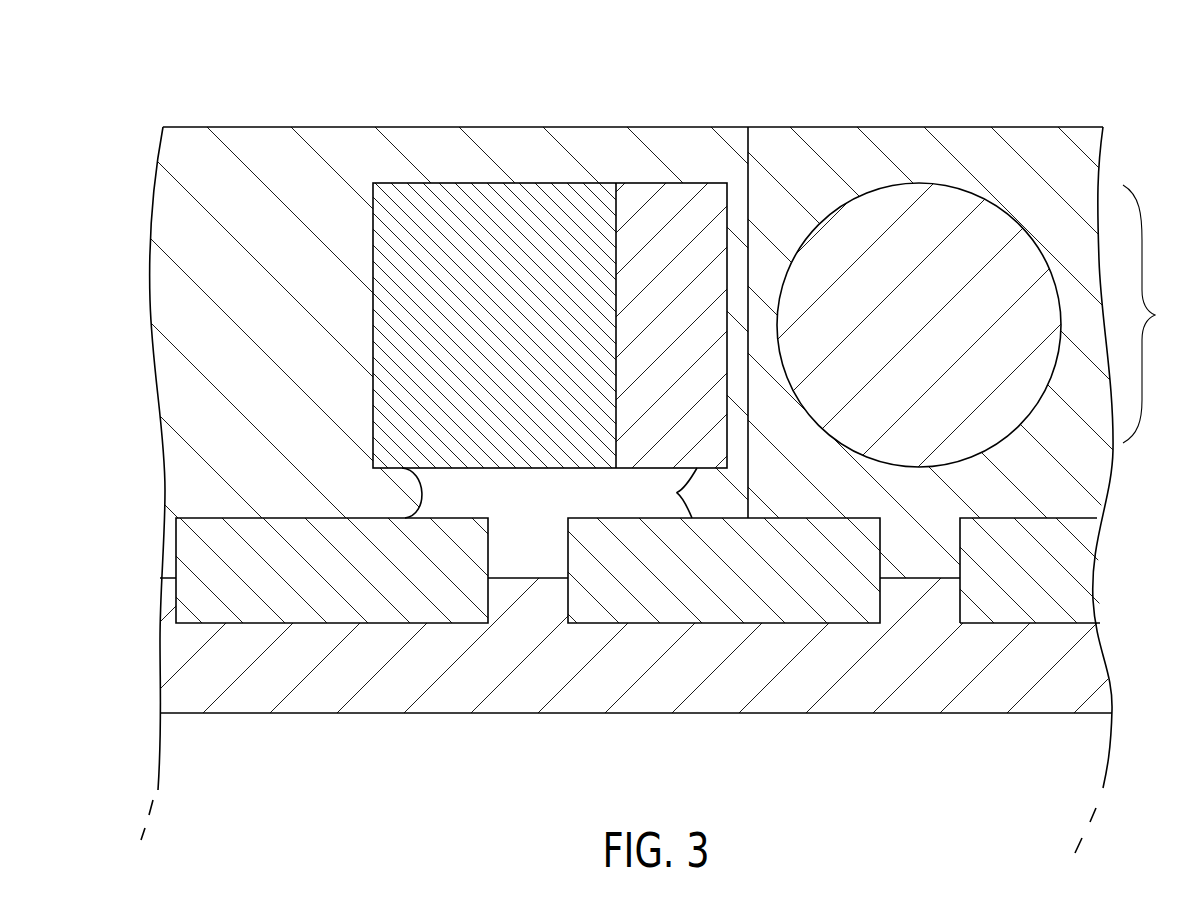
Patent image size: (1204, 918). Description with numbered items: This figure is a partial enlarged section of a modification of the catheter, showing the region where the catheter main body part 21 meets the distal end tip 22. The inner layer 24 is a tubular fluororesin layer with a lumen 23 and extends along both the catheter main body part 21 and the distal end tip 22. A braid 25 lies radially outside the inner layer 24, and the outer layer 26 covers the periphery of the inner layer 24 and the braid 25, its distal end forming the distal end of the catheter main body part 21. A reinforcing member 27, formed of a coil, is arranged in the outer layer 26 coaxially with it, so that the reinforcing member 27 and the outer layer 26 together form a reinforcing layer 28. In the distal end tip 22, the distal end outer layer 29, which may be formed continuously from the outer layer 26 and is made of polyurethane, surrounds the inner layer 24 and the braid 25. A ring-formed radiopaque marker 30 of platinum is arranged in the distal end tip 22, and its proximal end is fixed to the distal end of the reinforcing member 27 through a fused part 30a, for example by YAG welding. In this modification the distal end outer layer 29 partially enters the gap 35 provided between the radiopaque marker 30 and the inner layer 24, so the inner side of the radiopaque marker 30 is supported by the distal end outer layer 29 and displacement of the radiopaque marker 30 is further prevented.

The catheter main body part 21 is at (1032, 140).
The distal end tip 22 is at (223, 127).
The lumen 23 is at (1040, 740).
The inner layer 24 is at (1080, 660).
The braid 25 is at (1075, 567).
The outer layer 26 is at (1080, 482).
The reinforcing member 27 is at (937, 212).
The reinforcing layer 28 is at (1157, 314).
The distal end outer layer 29 is at (273, 152).
The radiopaque marker 30 is at (447, 213).
The fused part 30a is at (647, 210).
The gap 35 is at (527, 510).